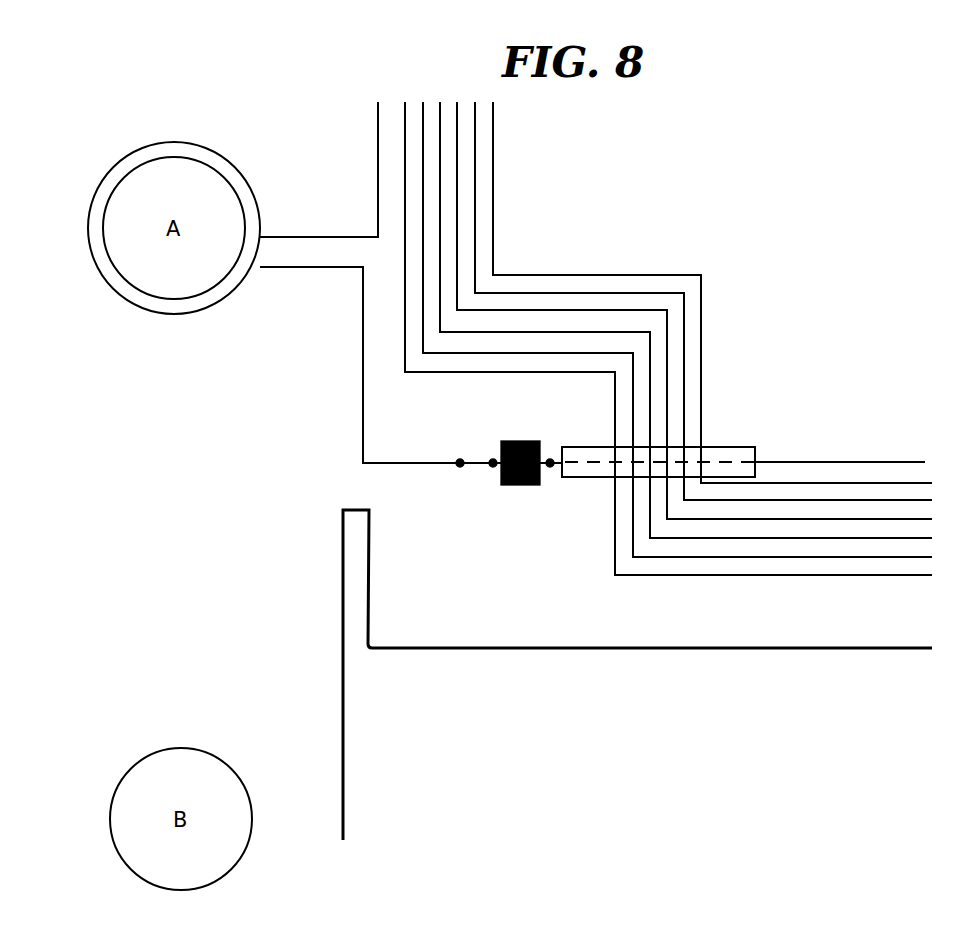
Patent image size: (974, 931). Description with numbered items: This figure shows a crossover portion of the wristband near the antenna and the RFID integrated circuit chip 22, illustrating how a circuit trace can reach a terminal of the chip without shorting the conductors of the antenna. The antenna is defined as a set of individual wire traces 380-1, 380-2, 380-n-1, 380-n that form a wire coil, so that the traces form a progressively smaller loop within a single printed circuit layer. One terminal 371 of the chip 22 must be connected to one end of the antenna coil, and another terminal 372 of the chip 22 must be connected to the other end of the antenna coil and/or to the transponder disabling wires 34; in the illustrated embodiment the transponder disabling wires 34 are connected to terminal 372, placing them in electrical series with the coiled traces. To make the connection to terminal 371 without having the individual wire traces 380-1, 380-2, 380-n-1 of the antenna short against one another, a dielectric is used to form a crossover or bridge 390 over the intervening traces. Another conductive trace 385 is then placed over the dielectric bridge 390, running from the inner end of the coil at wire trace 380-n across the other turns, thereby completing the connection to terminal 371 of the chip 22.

The transponder disabling wires 34 is at (332, 237).
The wire trace 380-1 is at (405, 290).
The wire trace 380-2 is at (733, 557).
The wire trace 380-n-1 is at (493, 195).
The wire trace 380-n is at (847, 462).
The RFID integrated circuit chip 22 is at (510, 441).
The terminal 371 is at (550, 460).
The terminal 372 is at (493, 468).
The conductive trace 385 is at (604, 458).
The crossover or bridge 390 is at (605, 477).